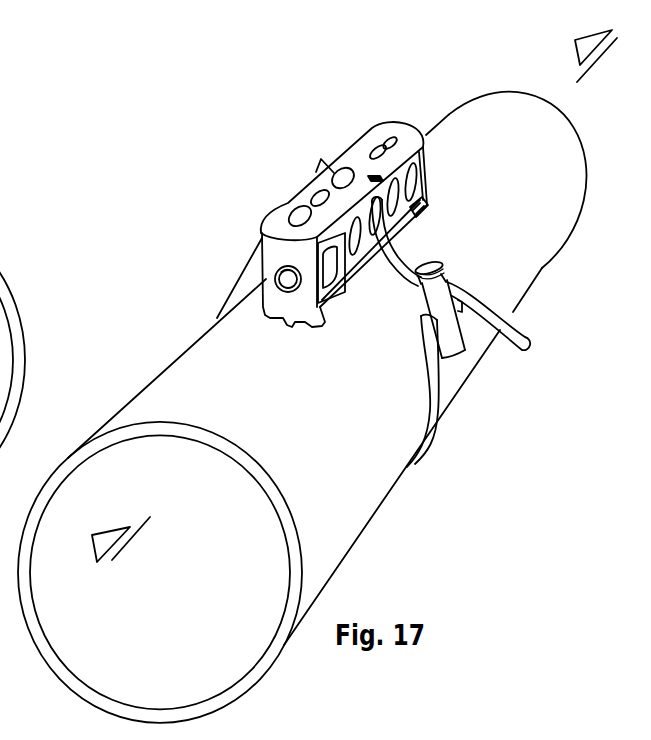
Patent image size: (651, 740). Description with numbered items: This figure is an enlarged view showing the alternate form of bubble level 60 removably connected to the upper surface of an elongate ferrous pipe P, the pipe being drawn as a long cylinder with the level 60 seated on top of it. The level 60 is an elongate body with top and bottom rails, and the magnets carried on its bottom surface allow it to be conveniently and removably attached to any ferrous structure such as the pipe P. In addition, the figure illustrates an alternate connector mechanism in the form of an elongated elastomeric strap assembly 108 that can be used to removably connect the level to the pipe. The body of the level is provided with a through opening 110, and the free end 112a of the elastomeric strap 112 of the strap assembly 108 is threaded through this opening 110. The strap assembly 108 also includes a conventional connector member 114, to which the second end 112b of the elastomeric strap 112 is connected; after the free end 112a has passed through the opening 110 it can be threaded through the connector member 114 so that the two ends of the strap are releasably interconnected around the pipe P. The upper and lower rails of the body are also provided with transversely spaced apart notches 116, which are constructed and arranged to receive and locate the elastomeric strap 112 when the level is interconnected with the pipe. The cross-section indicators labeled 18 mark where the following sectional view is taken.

The pipe P is at (457, 104).
The section line indicator (FIG. 18) 18 is at (354, 296).
The bubble level 60 is at (365, 135).
The through opening 110 is at (377, 214).
The notches 116 is at (320, 168).
The elastomeric strap 112 is at (402, 268).
The elastomeric strap assembly 108 is at (463, 269).
The free end of the elastomeric strap 112a is at (496, 315).
The second end of the elastomeric strap 112b is at (424, 315).
The connector member 114 is at (466, 346).